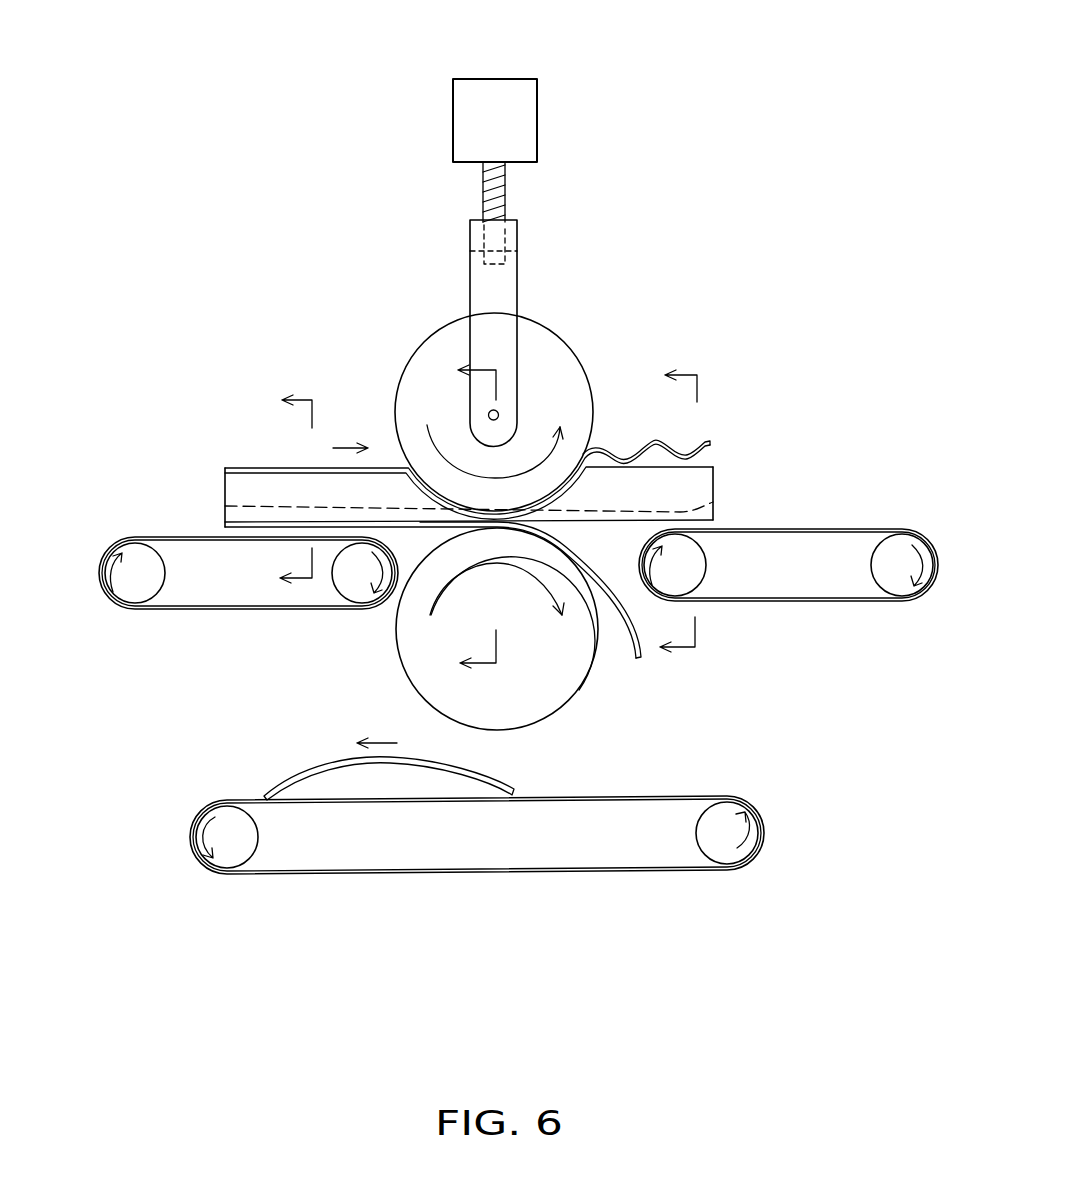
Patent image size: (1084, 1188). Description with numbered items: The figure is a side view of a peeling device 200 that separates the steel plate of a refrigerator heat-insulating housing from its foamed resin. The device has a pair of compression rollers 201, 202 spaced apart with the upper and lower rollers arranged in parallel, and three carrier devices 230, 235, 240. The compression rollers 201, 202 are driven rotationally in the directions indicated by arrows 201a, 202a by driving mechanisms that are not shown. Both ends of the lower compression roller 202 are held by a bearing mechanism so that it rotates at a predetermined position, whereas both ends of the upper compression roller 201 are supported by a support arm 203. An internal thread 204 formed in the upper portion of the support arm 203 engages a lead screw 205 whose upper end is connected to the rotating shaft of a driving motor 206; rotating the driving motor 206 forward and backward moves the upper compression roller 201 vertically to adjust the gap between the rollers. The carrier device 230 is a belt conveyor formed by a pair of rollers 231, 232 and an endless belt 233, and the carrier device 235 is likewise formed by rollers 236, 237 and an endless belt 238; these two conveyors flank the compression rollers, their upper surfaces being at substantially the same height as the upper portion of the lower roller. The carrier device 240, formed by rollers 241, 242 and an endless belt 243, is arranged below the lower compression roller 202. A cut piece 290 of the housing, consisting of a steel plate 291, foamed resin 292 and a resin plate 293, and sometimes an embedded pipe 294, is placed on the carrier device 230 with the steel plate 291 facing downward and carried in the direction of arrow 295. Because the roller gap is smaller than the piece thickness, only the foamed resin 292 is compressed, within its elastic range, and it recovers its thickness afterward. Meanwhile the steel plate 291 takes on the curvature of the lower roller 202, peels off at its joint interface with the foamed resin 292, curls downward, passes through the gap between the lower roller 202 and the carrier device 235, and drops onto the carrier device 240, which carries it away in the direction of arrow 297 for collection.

The peeling device 200 is at (358, 150).
The upper compression roller 201 is at (452, 318).
The arrow indicating rotation direction of upper compression roller 201a is at (580, 358).
The lower compression roller 202 is at (598, 658).
The arrow indicating rotation direction of lower compression roller 202a is at (579, 690).
The support arm 203 is at (518, 273).
The internal thread 204 is at (517, 235).
The lead screw 205 is at (507, 187).
The driving motor 206 is at (537, 110).
The carrier device 230 is at (248, 643).
The roller 231 is at (155, 595).
The roller 232 is at (338, 598).
The endless belt 233 is at (352, 683).
The carrier device 235 is at (788, 634).
The roller 236 is at (697, 590).
The roller 237 is at (880, 590).
The endless belt 238 is at (788, 604).
The carrier device 240 is at (477, 917).
The roller 241 is at (248, 843).
The roller 242 is at (700, 847).
The endless belt 243 is at (632, 965).
The piece (layered body) 290 is at (138, 357).
The steel plate 291 is at (225, 528).
The foamed resin 292 is at (225, 492).
The resin plate 293 is at (253, 467).
The pipe 294 is at (280, 505).
The arrow indicating carrying direction 295 is at (347, 446).
The arrow indicating carrying direction 297 is at (383, 743).